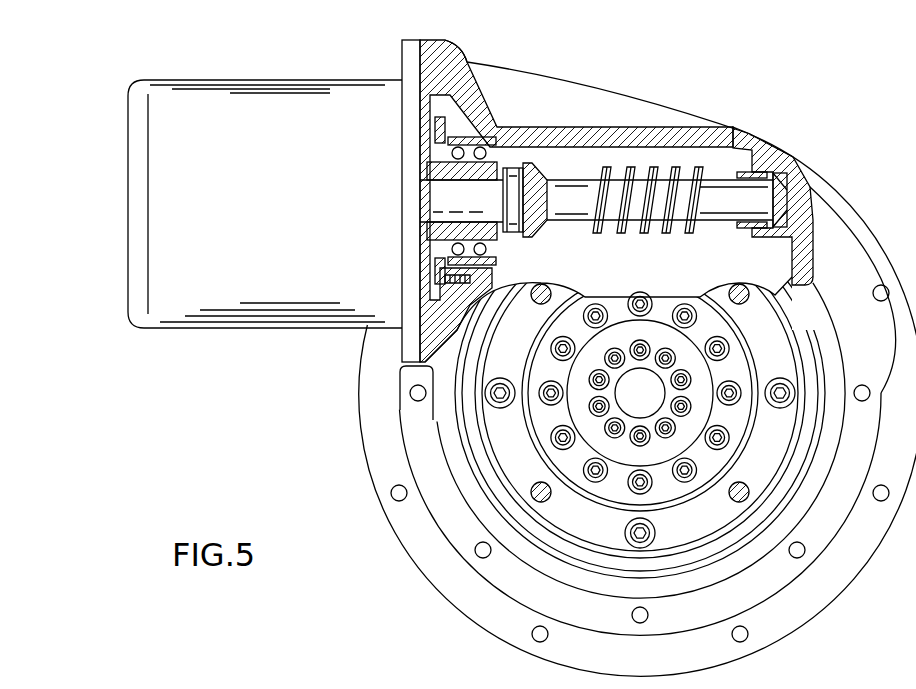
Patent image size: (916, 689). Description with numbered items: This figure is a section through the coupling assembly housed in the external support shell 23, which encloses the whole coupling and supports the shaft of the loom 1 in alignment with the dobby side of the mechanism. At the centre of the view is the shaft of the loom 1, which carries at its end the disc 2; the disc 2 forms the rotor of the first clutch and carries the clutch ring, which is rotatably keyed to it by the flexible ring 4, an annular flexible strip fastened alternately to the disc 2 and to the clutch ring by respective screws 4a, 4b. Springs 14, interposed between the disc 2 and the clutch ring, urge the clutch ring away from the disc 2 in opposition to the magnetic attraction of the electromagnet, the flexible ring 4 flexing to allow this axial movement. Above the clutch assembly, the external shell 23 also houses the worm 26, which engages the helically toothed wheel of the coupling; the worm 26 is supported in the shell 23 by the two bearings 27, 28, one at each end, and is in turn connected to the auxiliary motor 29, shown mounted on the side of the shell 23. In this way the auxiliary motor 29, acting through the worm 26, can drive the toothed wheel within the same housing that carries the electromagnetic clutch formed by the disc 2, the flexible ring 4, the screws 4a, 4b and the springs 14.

The shaft of the loom 1 is at (651, 399).
The disc 2 is at (730, 372).
The flexible ring 4 is at (700, 520).
The screws 4a is at (624, 531).
The screws 4b is at (527, 485).
The springs 14 is at (715, 440).
The external support shell 23 is at (838, 563).
The worm 26 is at (694, 172).
The bearing 27 is at (473, 133).
The bearing 28 is at (753, 175).
The auxiliary motor 29 is at (230, 307).